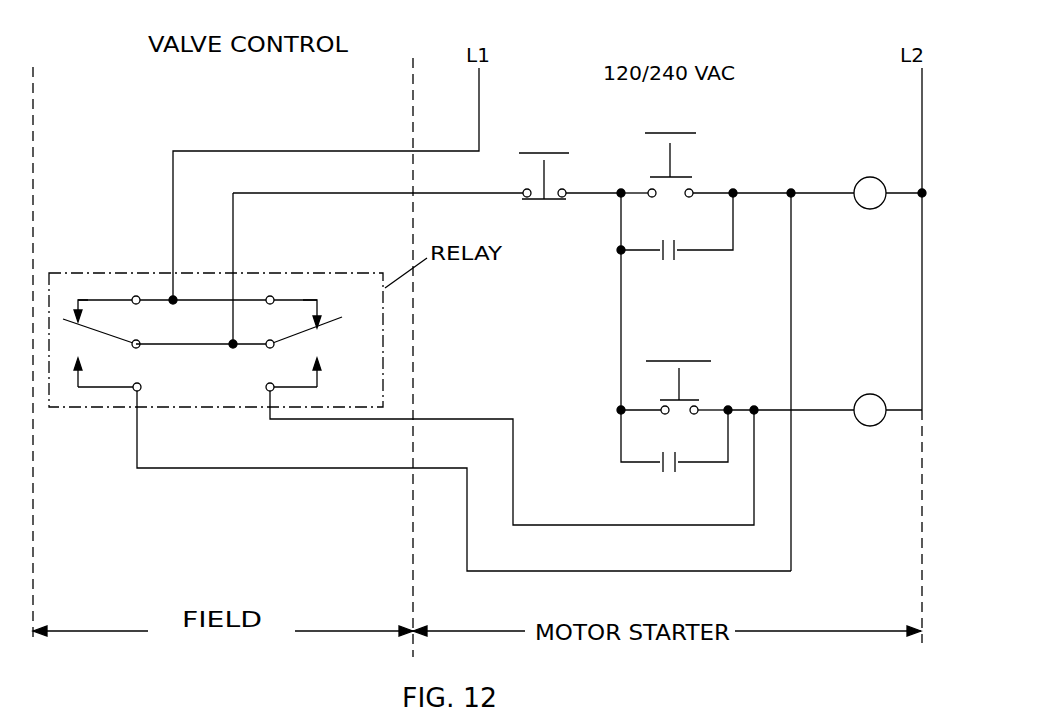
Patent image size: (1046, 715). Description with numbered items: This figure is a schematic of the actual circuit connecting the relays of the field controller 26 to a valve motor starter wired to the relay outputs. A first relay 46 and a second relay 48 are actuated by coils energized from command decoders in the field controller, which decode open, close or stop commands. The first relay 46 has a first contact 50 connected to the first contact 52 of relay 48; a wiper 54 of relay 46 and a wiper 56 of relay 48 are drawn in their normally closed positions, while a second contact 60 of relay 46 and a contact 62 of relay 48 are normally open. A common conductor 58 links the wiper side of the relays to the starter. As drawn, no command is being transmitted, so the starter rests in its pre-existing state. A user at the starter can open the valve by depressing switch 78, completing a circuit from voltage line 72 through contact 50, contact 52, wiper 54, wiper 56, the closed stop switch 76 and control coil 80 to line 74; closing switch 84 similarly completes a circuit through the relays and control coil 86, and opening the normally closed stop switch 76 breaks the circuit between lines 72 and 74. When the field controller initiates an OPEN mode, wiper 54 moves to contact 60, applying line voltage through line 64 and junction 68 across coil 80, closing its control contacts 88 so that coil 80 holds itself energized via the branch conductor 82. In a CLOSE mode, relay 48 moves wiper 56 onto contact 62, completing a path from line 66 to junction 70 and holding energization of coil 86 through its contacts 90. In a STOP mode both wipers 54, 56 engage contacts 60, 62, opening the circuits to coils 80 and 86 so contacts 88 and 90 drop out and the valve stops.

The field controller 26 is at (252, 645).
The first relay 46 is at (129, 282).
The second relay 48 is at (275, 282).
The first contact 50 is at (88, 298).
The first contact 52 is at (305, 299).
The wiper 54 is at (93, 331).
The wiper 56 is at (310, 331).
The common conductor 58 is at (193, 347).
The second contact 60 is at (95, 403).
The contact 62 is at (320, 383).
The line 64 is at (213, 470).
The line 66 is at (443, 418).
The junction 68 is at (791, 185).
The junction 70 is at (754, 400).
The voltage line 72 is at (479, 115).
The line 74 is at (922, 118).
The stop switch 76 is at (542, 200).
The switch 78 is at (670, 170).
The control coil 80 is at (875, 178).
The branch conductor 82 is at (619, 295).
The switch 84 is at (679, 387).
The control coil 86 is at (866, 427).
The control contacts 88 is at (668, 238).
The contacts 90 is at (660, 470).